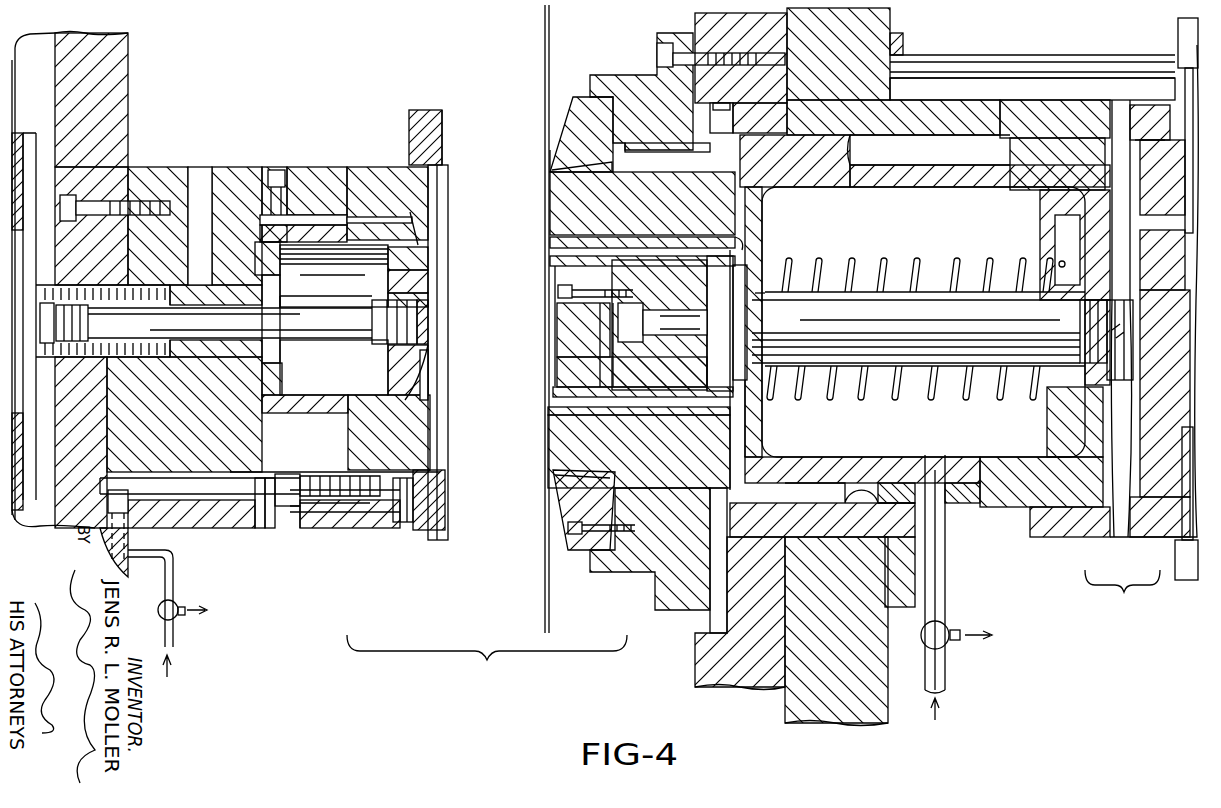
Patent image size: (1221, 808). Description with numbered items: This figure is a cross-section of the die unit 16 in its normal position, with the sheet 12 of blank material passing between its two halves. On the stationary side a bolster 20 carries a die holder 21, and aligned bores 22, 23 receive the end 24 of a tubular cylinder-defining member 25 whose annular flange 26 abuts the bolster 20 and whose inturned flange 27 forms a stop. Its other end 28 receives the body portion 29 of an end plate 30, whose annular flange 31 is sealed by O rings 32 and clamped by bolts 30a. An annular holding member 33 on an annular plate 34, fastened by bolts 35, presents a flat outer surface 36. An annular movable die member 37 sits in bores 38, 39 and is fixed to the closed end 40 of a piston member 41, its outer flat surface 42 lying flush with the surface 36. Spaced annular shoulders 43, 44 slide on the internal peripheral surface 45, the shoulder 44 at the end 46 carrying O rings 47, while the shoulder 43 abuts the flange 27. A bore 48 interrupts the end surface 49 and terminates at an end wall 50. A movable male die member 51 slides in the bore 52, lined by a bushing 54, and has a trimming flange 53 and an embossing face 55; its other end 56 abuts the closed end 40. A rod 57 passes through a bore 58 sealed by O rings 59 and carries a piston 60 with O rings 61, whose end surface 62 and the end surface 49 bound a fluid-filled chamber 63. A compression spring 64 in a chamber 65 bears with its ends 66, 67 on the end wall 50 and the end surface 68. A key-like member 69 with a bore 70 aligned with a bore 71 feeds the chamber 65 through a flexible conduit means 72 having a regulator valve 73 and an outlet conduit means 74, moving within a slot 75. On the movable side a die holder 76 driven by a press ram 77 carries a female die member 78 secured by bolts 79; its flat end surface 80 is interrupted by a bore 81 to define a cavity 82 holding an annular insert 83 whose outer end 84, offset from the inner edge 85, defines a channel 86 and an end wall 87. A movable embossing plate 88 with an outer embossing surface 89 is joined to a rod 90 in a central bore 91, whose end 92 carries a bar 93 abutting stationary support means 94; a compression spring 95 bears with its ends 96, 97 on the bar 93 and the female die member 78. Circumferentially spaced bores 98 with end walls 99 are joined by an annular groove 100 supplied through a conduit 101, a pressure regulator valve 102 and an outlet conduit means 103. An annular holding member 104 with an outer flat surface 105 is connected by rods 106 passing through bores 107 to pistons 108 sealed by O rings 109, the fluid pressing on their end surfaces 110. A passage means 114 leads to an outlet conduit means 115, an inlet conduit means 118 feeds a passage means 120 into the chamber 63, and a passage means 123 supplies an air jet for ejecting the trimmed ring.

The sheet of blank material 12 is at (545, 84).
The die unit 16 is at (402, 64).
The stationary bolster 20 is at (880, 32).
The die holder 21 is at (746, 32).
The bore 22 is at (828, 104).
The bore 23 is at (730, 104).
The end of cylinder-defining member 24 is at (790, 100).
The tubular cylinder-defining member 25 is at (1004, 76).
The annular flange 26 is at (904, 46).
The inturned flange 27 is at (752, 150).
The other end of cylinder-defining member 28 is at (1148, 120).
The body portion of end plate 29 is at (1130, 520).
The end plate 30 is at (1160, 336).
The bolts 30a is at (1072, 60).
The annular flange of end plate 31 is at (1172, 552).
The O rings 32 is at (1148, 148).
The annular holding member 33 is at (579, 105).
The annular plate 34 is at (630, 80).
The bolts 35 is at (684, 48).
The flat outer surface 36 is at (548, 158).
The annular movable die member 37 is at (556, 195).
The bore 38 is at (584, 166).
The bore 39 is at (652, 148).
The closed end of piston member 40 is at (764, 230).
The piston member 41 is at (944, 165).
The outer flat surface 42 is at (546, 226).
The annular shoulder 43 is at (843, 142).
The annular shoulder 44 is at (1066, 148).
The internal peripheral surface 45 is at (1006, 134).
The end of piston 46 is at (1100, 172).
The O rings 47 is at (1060, 136).
The bore of piston 48 is at (942, 190).
The end surface of piston 49 is at (1118, 128).
The end wall 50 is at (766, 250).
The movable male die member 51 is at (560, 272).
The bore of annular die member 52 is at (622, 240).
The outwardly directed flange 53 is at (674, 250).
The bushing 54 is at (648, 240).
The embossing face 55 is at (556, 326).
The other end of male die member 56 is at (740, 240).
The shaft or rod 57 is at (866, 268).
The bore 58 is at (755, 292).
The O rings 59 is at (760, 294).
The piston 60 is at (1052, 240).
The O rings 61 is at (1054, 190).
The end surface of piston 62 is at (1056, 220).
The chamber 63 is at (1146, 254).
The compression spring 64 is at (912, 262).
The chamber 65 is at (841, 202).
The end of spring 66 is at (770, 399).
The other end of spring 67 is at (1058, 262).
The end surface of piston 68 is at (1062, 420).
The key-like member 69 is at (968, 480).
The bore 70 is at (924, 476).
The bore 71 is at (938, 470).
The flexible conduit means 72 is at (946, 600).
The regulator valve 73 is at (921, 636).
The outlet conduit means 74 is at (953, 641).
The slot 75 is at (990, 540).
The die holder 76 is at (118, 68).
The press ram 77 is at (42, 46).
The female die member 78 is at (312, 178).
The bolts 79 is at (142, 200).
The flat end surface 80 is at (430, 200).
The bore 81 is at (432, 378).
The cavity 82 is at (323, 256).
The annular insert 83 is at (308, 398).
The outer end of insert 84 is at (430, 245).
The inner edge 85 is at (430, 405).
The channel 86 is at (435, 393).
The end wall 87 is at (283, 375).
The movable embossing plate 88 is at (420, 350).
The outer embossing surface 89 is at (432, 292).
The rod 90 is at (336, 312).
The central bore 91 is at (216, 342).
The end of rod 92 is at (76, 352).
The bar 93 is at (38, 178).
The stationary support means 94 is at (18, 140).
The compression spring 95 is at (112, 286).
The end of spring 96 is at (50, 342).
The other end of spring 97 is at (196, 276).
The bores 98 is at (166, 480).
The end walls 99 is at (244, 478).
The annular groove 100 is at (118, 490).
The conduit 101 is at (182, 556).
The pressure regulator valve 102 is at (176, 604).
The outlet conduit means 103 is at (182, 618).
The annular holding member 104 is at (436, 122).
The outer flat surface 105 is at (447, 160).
The rods 106 is at (346, 512).
The bores 107 is at (298, 520).
The piston 108 is at (270, 522).
The O ring 109 is at (286, 476).
The end surfaces of pistons 110 is at (256, 522).
The passage means 114 is at (1166, 241).
The outlet conduit means 115 is at (1178, 30).
The inlet conduit means 118 is at (1183, 580).
The passage means 120 is at (1180, 497).
The passage means 123 is at (302, 216).